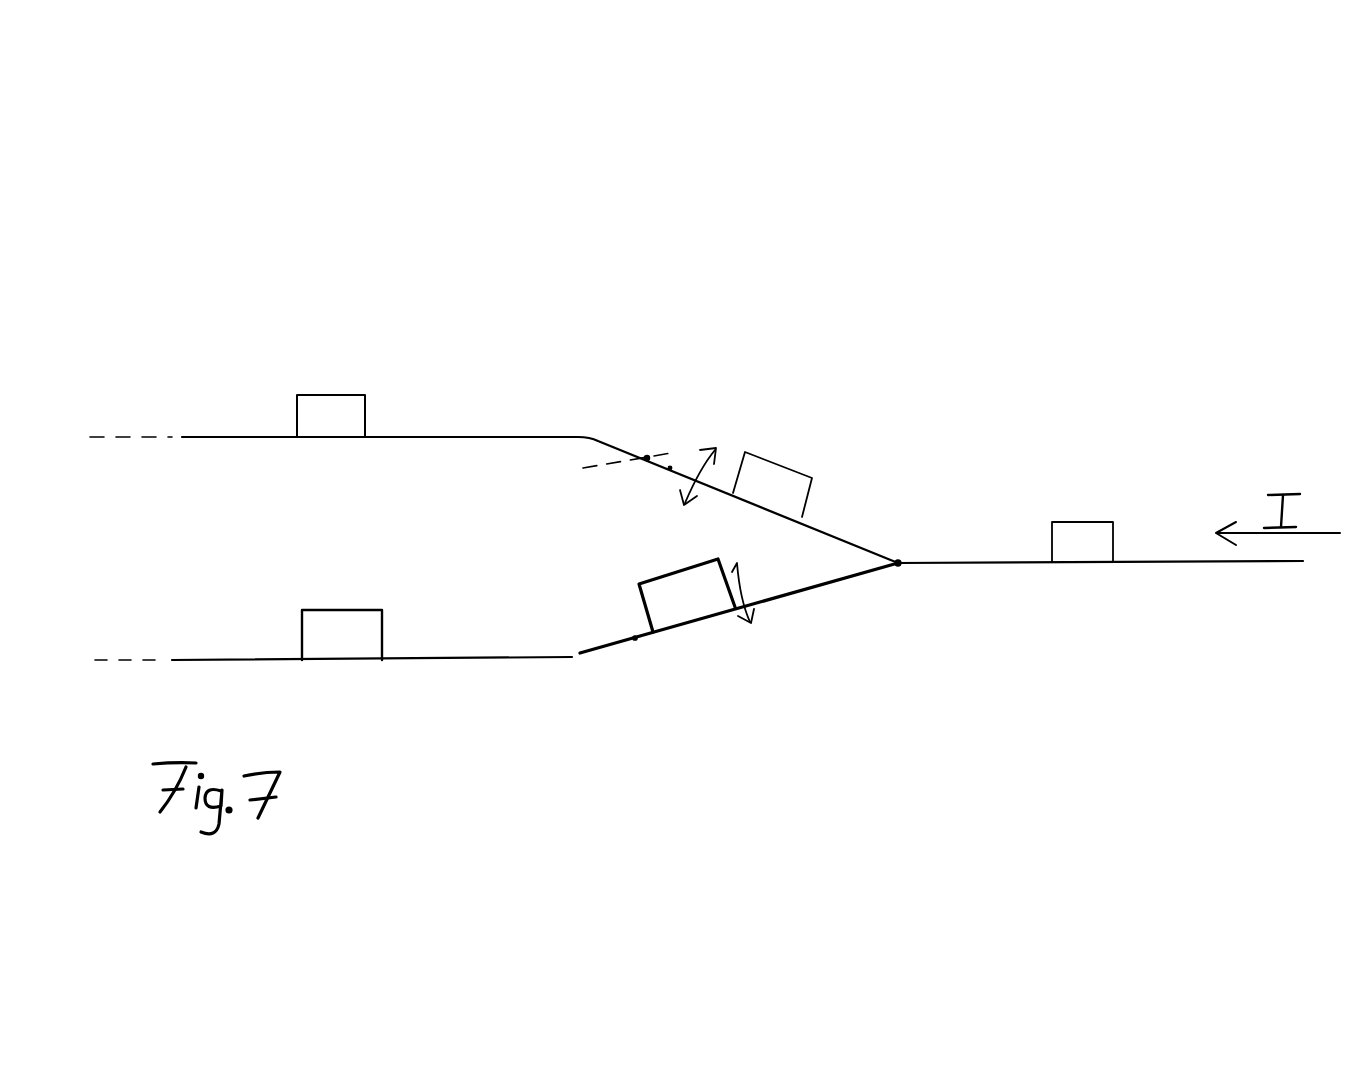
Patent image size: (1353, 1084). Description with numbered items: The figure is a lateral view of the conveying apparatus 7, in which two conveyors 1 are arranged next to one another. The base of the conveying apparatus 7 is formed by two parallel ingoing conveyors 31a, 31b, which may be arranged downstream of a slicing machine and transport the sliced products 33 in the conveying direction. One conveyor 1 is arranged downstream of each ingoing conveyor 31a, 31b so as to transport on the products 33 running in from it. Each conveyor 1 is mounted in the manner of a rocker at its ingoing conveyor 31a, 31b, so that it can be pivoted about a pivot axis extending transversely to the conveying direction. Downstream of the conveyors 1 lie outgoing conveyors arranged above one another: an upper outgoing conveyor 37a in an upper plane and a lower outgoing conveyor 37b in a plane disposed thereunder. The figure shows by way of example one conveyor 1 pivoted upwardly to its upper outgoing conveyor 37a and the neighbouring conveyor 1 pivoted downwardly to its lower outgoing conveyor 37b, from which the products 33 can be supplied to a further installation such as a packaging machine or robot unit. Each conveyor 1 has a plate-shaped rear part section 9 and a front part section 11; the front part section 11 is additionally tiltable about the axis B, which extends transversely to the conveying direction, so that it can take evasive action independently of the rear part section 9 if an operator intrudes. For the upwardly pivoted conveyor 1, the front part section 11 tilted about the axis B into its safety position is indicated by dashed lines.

The conveying apparatus 7 is at (897, 197).
The products 33 is at (352, 393).
The front part section 11 is at (612, 448).
The conveyor 1 is at (768, 444).
The rear part section 9 is at (838, 533).
The upper outgoing conveyor 37a is at (456, 440).
The lower outgoing conveyor 37b is at (485, 660).
The ingoing conveyor 31a is at (1100, 598).
The ingoing conveyor 31b is at (1168, 566).
The second axis B is at (647, 458).